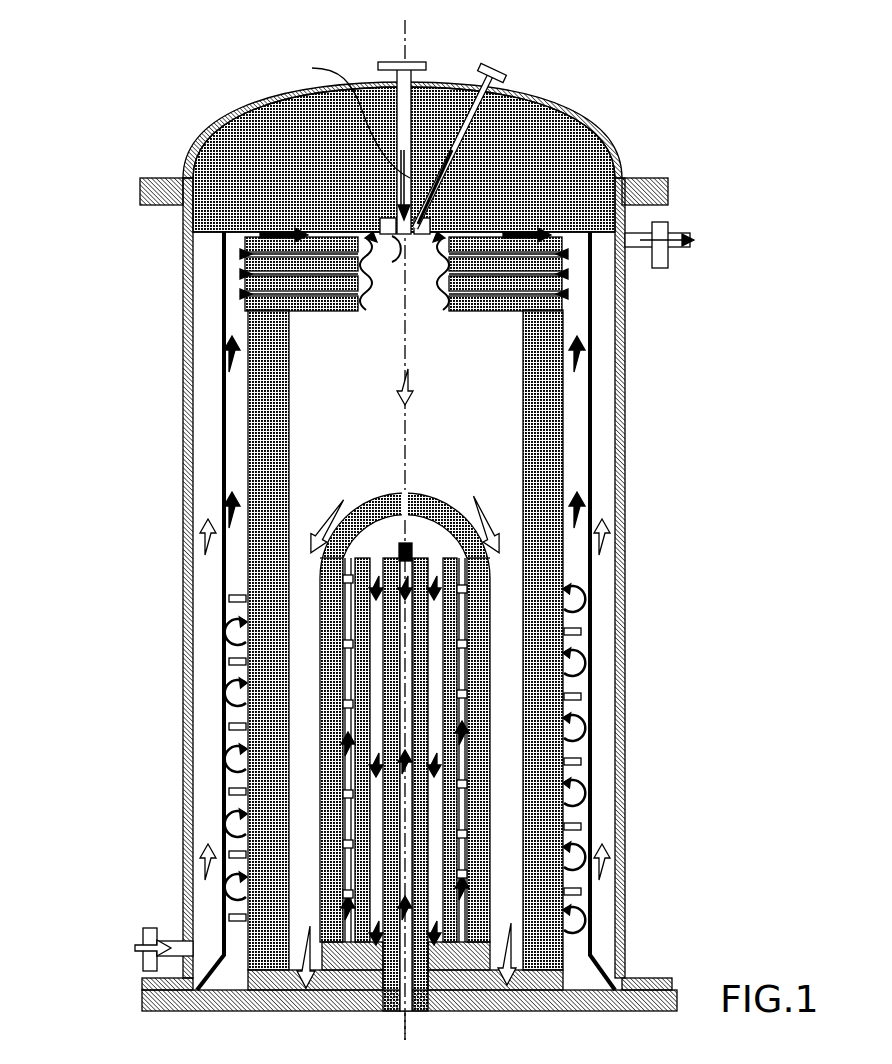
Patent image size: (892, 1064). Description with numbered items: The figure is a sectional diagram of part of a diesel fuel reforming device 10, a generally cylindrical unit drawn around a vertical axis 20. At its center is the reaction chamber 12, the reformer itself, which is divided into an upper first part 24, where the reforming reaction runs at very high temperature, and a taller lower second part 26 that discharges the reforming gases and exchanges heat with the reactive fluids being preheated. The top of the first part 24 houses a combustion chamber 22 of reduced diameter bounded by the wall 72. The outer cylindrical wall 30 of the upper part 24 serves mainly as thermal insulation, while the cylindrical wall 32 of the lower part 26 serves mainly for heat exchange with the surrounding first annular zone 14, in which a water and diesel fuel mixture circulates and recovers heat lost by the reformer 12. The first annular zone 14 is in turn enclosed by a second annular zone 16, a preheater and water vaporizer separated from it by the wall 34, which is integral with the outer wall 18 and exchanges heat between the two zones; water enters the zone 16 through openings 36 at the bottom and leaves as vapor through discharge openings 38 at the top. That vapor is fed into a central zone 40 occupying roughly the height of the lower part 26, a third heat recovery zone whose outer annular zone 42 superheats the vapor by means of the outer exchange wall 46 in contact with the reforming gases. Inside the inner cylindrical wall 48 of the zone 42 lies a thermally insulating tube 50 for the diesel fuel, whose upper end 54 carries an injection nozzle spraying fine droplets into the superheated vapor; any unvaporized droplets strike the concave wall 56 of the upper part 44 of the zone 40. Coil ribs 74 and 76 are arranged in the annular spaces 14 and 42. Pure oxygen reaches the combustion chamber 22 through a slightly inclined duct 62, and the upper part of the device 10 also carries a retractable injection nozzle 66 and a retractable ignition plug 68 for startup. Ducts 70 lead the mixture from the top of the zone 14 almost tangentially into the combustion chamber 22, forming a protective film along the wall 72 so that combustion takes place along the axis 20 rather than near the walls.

The reforming device 10 is at (595, 116).
The reaction chamber 12 is at (386, 419).
The first annular zone 14 is at (226, 402).
The second annular zone 16 is at (207, 462).
The outer wall 18 is at (183, 510).
The axis 20 is at (398, 52).
The combustion chamber 22 is at (421, 303).
The first part of the reaction chamber 24 is at (341, 436).
The second part of the reaction chamber 26 is at (314, 693).
The outer cylindrical wall of the upper part 30 is at (285, 376).
The cylindrical wall of the lower part 32 is at (270, 626).
The separating wall 34 is at (226, 712).
The water inlet openings 36 is at (140, 945).
The vapor discharge openings 38 is at (668, 235).
The central zone 40 is at (338, 777).
The outer annular zone of the central zone 42 is at (462, 604).
The upper part of the central zone 44 is at (401, 539).
The outer exchange wall 46 is at (478, 664).
The inner cylindrical wall 48 is at (466, 716).
The diesel fuel introduction tube 50 is at (412, 796).
The upper end with injection nozzle 54 is at (410, 545).
The concave wall 56 is at (407, 515).
The oxygen duct 62 is at (470, 118).
The retractable injection nozzle 66 is at (438, 84).
The retractable ignition plug 68 is at (341, 115).
The ducts 70 is at (505, 310).
The combustion chamber wall 72 is at (440, 312).
The coil rib in the first annular zone 74 is at (265, 846).
The coil rib in the outer annular zone 76 is at (500, 870).